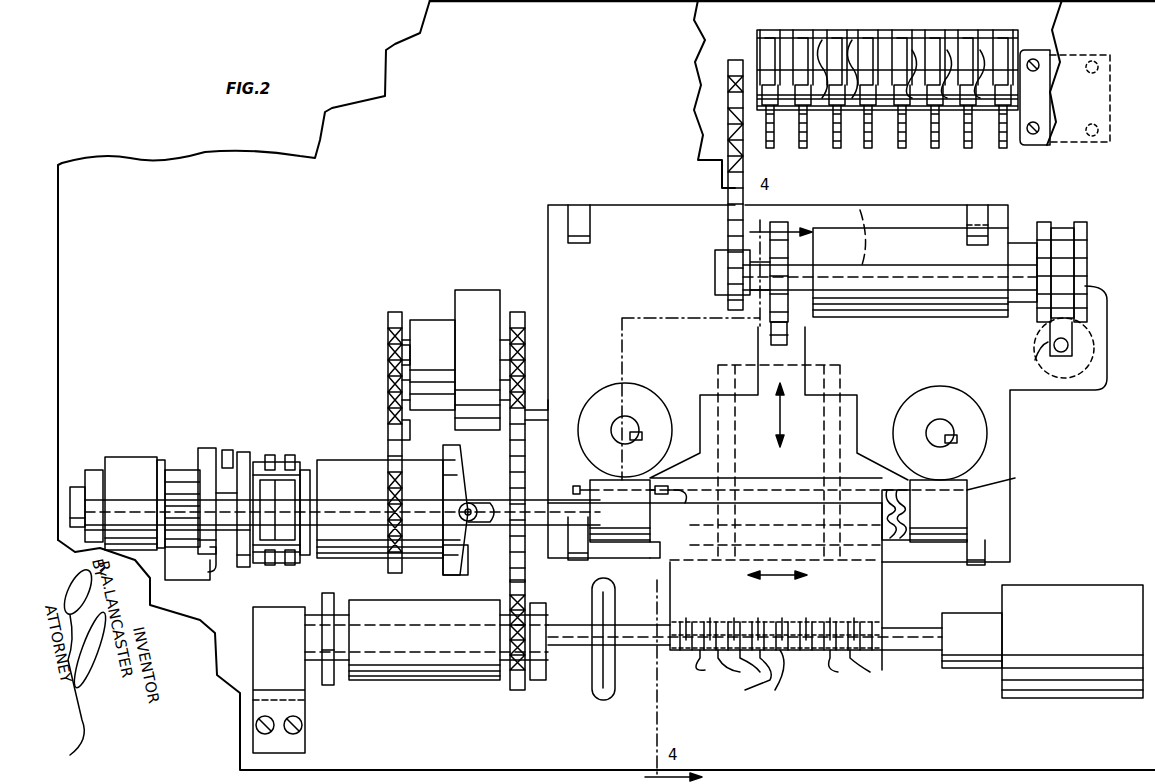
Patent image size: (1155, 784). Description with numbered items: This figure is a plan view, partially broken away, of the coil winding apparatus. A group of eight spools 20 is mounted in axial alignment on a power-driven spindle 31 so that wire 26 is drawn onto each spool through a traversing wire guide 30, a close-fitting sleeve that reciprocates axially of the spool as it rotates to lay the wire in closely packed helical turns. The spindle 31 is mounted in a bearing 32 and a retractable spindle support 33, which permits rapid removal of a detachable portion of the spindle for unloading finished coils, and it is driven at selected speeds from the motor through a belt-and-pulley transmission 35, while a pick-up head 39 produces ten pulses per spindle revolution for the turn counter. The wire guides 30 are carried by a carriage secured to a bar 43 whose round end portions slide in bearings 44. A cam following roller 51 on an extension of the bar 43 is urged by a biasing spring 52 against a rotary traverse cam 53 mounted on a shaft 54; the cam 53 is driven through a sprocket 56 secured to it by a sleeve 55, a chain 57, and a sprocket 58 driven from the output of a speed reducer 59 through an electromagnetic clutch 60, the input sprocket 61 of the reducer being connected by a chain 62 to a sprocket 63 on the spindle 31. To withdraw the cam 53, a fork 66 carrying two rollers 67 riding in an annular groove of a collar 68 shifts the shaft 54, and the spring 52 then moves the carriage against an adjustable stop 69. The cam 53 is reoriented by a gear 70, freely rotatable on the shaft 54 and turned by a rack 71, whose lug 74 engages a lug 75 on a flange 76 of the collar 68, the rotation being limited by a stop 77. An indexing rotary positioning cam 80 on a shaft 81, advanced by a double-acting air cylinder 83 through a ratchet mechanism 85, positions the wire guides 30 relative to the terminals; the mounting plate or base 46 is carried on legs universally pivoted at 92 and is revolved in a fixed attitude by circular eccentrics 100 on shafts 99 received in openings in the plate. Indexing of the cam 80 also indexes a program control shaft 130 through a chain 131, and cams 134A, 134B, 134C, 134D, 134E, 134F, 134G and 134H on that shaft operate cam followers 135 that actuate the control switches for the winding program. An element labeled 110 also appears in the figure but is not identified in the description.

The spool 20 is at (812, 620).
The wire 26 is at (745, 690).
The wire guide 30 is at (783, 670).
The spindle 31 is at (640, 648).
The bearing 32 is at (395, 680).
The retractable spindle support 33 is at (975, 660).
The belt-and-pulley transmission 35 is at (596, 685).
The pick-up head 39 is at (250, 690).
The bar 43 is at (660, 548).
The bearings 44 is at (595, 480).
The mounting plate 46 is at (660, 277).
The cam following roller 51 is at (470, 524).
The biasing spring 52 is at (902, 548).
The rotary traverse cam 53 is at (466, 480).
The shaft 54 is at (318, 490).
The sleeve 55 is at (355, 460).
The sprocket 56 is at (443, 572).
The chain 57 is at (388, 412).
The sprocket 58 is at (388, 360).
The speed reducer 59 is at (478, 290).
The electromagnetic clutch 60 is at (432, 320).
The sprocket 61 is at (525, 312).
The chain 62 is at (540, 410).
The sprocket 63 is at (518, 690).
The fork 66 is at (268, 462).
The rollers 67 is at (290, 455).
The collar 68 is at (305, 555).
The stop 69 is at (670, 504).
The gear 70 is at (182, 470).
The rack 71 is at (182, 580).
The lug 74 is at (206, 448).
The lug 75 is at (227, 450).
The flange 76 is at (243, 567).
The stop 77 is at (212, 572).
The indexing rotary positioning cam 80 is at (788, 235).
The shaft 81 is at (866, 212).
The double-acting air cylinder 83 is at (1030, 358).
The ratchet mechanism 85 is at (1062, 222).
The universal pivots 92 is at (580, 205).
The shafts 99 is at (632, 424).
The circular eccentrics 100 is at (645, 395).
The disc 110 is at (330, 685).
The program control shaft 130 is at (1020, 40).
The chain 131 is at (728, 186).
The cam 134A is at (768, 40).
The cam 134B is at (795, 58).
The cam 134C is at (836, 145).
The cam 134D is at (868, 145).
The cam 134E is at (901, 145).
The cam 134F is at (935, 148).
The cam 134G is at (968, 150).
The cam 134H is at (1003, 148).
The cam followers 135 is at (852, 40).